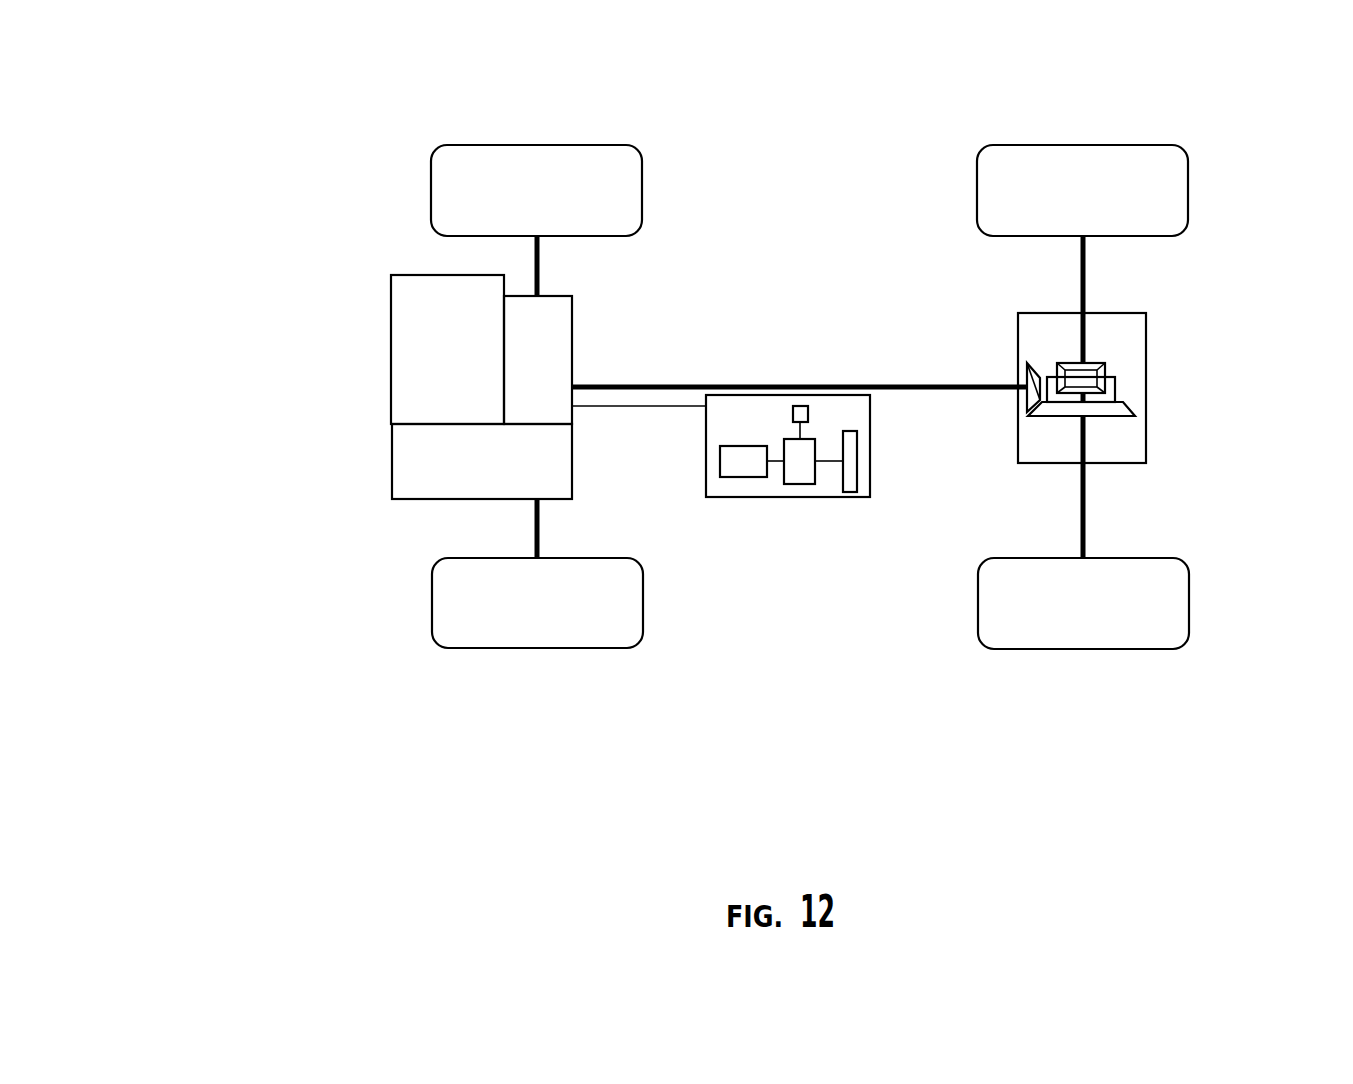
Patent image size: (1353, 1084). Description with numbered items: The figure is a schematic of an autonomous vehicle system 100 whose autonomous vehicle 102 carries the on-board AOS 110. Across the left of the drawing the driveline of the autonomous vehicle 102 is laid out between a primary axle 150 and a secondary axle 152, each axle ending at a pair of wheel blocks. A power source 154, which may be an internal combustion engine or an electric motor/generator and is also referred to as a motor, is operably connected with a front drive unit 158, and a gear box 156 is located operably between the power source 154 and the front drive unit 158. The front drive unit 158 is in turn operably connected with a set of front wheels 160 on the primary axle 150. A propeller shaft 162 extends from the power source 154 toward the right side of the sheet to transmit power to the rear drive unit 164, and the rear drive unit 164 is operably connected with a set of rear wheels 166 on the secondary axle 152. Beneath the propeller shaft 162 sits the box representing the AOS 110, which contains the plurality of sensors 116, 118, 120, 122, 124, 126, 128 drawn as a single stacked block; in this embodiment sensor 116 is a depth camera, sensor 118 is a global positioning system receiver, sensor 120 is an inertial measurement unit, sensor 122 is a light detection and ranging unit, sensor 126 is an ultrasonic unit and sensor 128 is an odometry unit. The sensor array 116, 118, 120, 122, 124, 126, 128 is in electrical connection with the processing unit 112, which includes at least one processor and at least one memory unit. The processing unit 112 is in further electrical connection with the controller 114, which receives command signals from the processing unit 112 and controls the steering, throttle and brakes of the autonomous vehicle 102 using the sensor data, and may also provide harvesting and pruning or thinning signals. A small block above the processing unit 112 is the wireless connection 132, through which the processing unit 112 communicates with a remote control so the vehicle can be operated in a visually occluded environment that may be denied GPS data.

The autonomous vehicle system 100 is at (278, 172).
The autonomous vehicle 102 is at (794, 217).
The AOS 110 is at (873, 472).
The processing unit 112 is at (800, 473).
The controller 114 is at (739, 469).
The sensor 116 is at (858, 561).
The sensor 118 is at (858, 561).
The sensor 120 is at (858, 561).
The sensor 122 is at (858, 561).
The sensor 124 is at (858, 561).
The sensor 126 is at (858, 561).
The sensor 128 is at (847, 487).
The wireless connection 132 is at (808, 412).
The primary axle 150 is at (532, 525).
The secondary axle 152 is at (1081, 265).
The power source 154 is at (430, 353).
The gear box 156 is at (417, 474).
The front drive unit 158 is at (543, 319).
The front wheels 160 is at (552, 201).
The propeller shaft 162 is at (733, 383).
The rear drive unit 164 is at (1127, 333).
The rear wheels 166 is at (1096, 200).